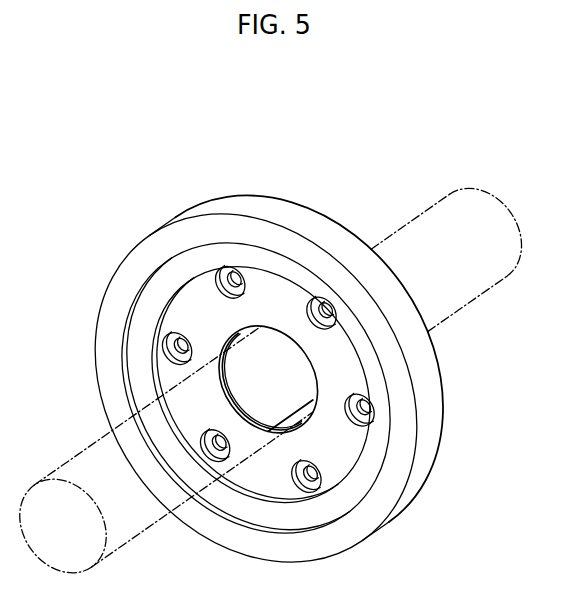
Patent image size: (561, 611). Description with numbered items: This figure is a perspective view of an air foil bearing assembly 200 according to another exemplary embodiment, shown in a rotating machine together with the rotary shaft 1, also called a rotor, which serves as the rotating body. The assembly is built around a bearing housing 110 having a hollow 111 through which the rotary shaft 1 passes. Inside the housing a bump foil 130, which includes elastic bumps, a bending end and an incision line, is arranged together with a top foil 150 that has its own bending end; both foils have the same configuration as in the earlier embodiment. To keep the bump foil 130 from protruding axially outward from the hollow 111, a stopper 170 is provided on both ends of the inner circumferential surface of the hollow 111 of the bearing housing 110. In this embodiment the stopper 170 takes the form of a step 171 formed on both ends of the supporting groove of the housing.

The air foil bearing assembly 200 is at (200, 147).
The bearing housing 110 is at (300, 202).
The hollow 111 is at (276, 366).
The bump foil 130 is at (251, 434).
The top foil 150 is at (289, 396).
The stopper 170 is at (214, 398).
The step 171 is at (229, 416).
The rotary shaft 1 is at (416, 210).